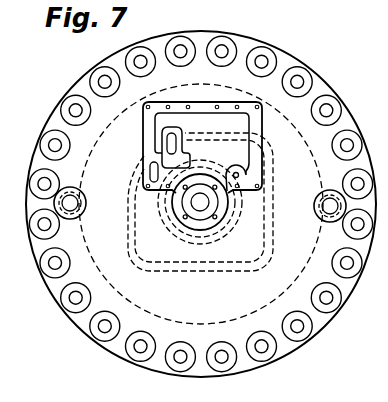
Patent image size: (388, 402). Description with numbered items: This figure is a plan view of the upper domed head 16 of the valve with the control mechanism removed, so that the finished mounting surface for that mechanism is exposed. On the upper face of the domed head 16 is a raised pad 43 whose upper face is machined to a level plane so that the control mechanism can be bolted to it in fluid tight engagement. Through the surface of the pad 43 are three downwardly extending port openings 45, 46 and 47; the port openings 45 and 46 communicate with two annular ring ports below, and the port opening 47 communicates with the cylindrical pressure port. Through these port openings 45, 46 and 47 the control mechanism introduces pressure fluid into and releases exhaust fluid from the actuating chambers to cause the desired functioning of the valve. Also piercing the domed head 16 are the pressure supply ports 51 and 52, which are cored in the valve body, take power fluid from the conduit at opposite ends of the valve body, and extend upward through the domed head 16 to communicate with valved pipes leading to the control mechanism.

The upper domed head 16 is at (279, 70).
The raised pad 43 is at (258, 124).
The port opening 45 is at (150, 168).
The port opening 46 is at (168, 141).
The port opening 47 is at (246, 173).
The pressure supply port 51 is at (70, 203).
The pressure supply port 52 is at (330, 206).